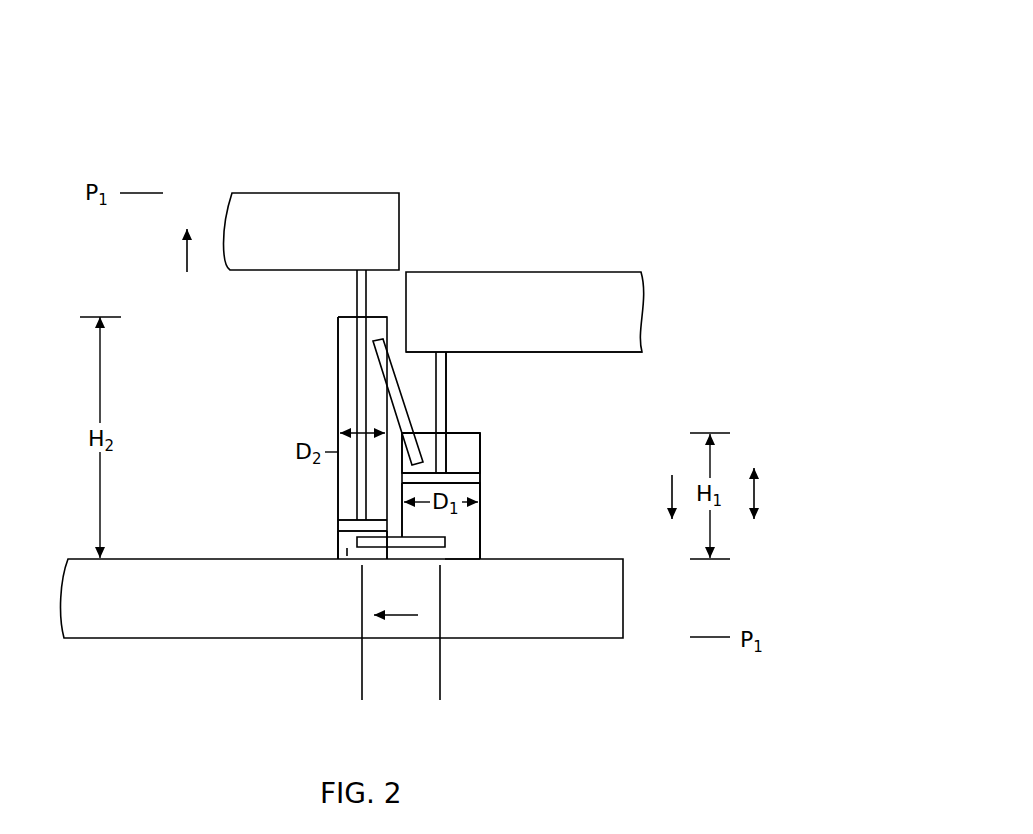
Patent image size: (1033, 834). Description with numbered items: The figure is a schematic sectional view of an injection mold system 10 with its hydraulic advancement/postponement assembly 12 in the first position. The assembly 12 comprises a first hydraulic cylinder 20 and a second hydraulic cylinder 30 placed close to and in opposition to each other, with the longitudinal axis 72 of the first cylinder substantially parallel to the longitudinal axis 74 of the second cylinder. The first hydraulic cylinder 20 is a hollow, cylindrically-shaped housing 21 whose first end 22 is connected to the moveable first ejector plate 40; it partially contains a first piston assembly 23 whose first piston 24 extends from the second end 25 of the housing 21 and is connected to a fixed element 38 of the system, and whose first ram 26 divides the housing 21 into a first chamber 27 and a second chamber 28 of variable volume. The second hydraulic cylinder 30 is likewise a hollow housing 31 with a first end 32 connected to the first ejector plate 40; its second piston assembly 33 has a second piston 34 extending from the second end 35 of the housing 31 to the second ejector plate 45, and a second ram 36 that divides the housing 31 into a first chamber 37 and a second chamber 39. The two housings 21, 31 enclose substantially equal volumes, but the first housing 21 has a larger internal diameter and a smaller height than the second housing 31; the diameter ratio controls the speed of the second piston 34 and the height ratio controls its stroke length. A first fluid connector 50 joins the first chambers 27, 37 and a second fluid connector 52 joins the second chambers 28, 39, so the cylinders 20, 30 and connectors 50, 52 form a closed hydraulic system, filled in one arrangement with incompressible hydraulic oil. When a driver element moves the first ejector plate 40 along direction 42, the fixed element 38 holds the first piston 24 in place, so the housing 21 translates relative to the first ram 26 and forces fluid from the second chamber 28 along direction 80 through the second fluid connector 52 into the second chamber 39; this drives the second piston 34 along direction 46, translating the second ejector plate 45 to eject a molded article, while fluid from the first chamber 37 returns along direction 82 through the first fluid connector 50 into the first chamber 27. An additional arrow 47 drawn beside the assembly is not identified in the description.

The injection mold system 10 is at (613, 80).
The hydraulic advancement/postponement assembly 12 is at (626, 270).
The first hydraulic cylinder 20 is at (500, 498).
The housing 21 is at (481, 530).
The first end 22 is at (484, 556).
The first piston assembly 23 is at (452, 388).
The first piston 24 is at (441, 367).
The second end 25 is at (482, 452).
The first ram 26 is at (481, 477).
The first chamber 27 is at (473, 460).
The second chamber 28 is at (428, 542).
The second hydraulic cylinder 30 is at (290, 437).
The housing 31 is at (337, 372).
The first end 32 is at (330, 549).
The second piston assembly 33 is at (322, 338).
The second piston 34 is at (368, 292).
The second end 35 is at (350, 316).
The second ram 36 is at (337, 527).
The first chamber 37 is at (347, 397).
The fixed element 38 is at (607, 352).
The second chamber 39 is at (347, 556).
The first ejector plate 40 is at (623, 595).
The direction 42 is at (757, 492).
The second ejector plate 45 is at (301, 193).
The direction 46 is at (187, 258).
The downward direction 47 is at (672, 490).
The first fluid connector 50 is at (403, 432).
The second fluid connector 52 is at (445, 547).
The longitudinal axis 72 is at (440, 685).
The longitudinal axis 74 is at (362, 680).
The direction 80 is at (407, 615).
The direction 82 is at (414, 413).